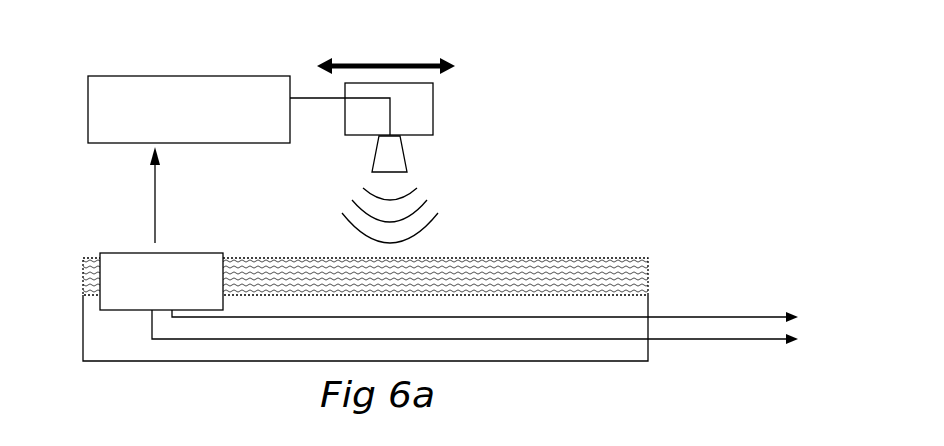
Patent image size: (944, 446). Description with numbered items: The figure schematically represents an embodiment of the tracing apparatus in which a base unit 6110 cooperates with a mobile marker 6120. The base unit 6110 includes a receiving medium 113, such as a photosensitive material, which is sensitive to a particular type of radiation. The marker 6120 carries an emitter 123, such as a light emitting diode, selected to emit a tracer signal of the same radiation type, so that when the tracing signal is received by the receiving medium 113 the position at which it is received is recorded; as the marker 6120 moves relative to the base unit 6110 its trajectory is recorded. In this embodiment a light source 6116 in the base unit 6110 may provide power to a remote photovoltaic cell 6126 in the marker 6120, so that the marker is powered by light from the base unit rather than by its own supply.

The base unit 6110 is at (782, 264).
The receiving medium 113 is at (628, 277).
The light source 6116 is at (105, 297).
The photovoltaic cell 6126 is at (108, 133).
The marker 6120 is at (508, 90).
The emitter 123 is at (397, 153).